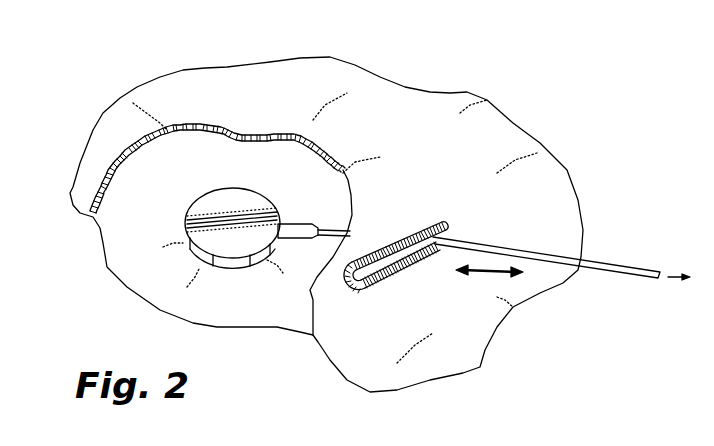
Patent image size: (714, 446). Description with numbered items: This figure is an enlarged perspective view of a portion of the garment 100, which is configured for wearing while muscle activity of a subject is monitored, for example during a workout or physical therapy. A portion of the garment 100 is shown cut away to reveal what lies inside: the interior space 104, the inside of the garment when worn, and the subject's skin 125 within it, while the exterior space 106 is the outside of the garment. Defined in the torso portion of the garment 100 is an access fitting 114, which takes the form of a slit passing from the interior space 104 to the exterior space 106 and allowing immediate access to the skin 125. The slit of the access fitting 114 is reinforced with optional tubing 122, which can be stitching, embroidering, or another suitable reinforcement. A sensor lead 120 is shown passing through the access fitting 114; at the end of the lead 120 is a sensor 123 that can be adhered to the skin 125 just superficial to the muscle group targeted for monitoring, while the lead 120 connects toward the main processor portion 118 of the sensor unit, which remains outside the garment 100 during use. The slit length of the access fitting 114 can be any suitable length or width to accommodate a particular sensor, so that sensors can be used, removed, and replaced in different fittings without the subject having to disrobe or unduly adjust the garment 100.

The garment 100 is at (534, 110).
The interior space 104 is at (210, 141).
The exterior space 106 is at (400, 59).
The access fitting 114 is at (425, 222).
The main processor portion 118 is at (652, 299).
The sensor lead 120 is at (623, 263).
The tubing 122 is at (393, 272).
The sensor 123 is at (243, 200).
The skin 125 is at (142, 260).